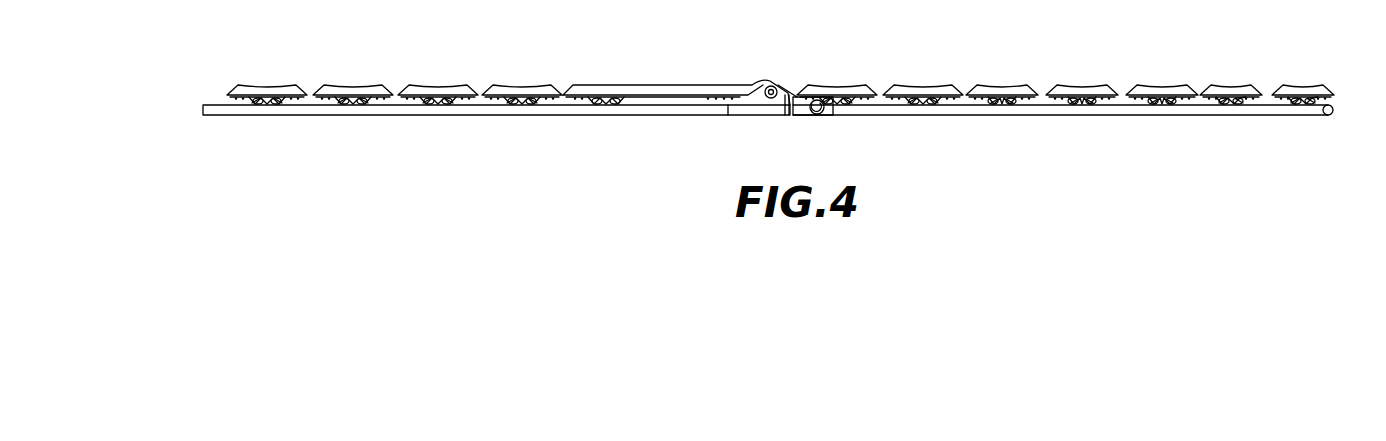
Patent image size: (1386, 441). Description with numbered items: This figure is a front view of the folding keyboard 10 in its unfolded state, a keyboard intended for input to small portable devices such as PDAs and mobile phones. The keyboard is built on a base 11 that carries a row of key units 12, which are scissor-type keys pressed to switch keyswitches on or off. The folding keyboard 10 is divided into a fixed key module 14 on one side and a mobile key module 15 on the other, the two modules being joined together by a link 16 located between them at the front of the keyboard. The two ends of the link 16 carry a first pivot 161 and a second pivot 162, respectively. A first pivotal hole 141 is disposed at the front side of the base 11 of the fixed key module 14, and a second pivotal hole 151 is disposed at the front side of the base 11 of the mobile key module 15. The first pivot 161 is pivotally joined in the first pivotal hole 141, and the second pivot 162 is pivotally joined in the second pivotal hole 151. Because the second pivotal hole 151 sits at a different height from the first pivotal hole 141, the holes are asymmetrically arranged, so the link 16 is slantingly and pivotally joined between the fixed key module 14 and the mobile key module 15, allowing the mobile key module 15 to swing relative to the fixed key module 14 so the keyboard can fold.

The folding keyboard 10 is at (343, 71).
The base 11 is at (397, 113).
The key units 12 is at (412, 88).
The fixed key module 14 is at (475, 92).
The mobile key module 15 is at (1074, 108).
The link 16 is at (807, 127).
The first pivotal hole 141 is at (762, 89).
The second pivotal hole 151 is at (829, 95).
The first pivot 161 is at (768, 97).
The second pivot 162 is at (826, 114).